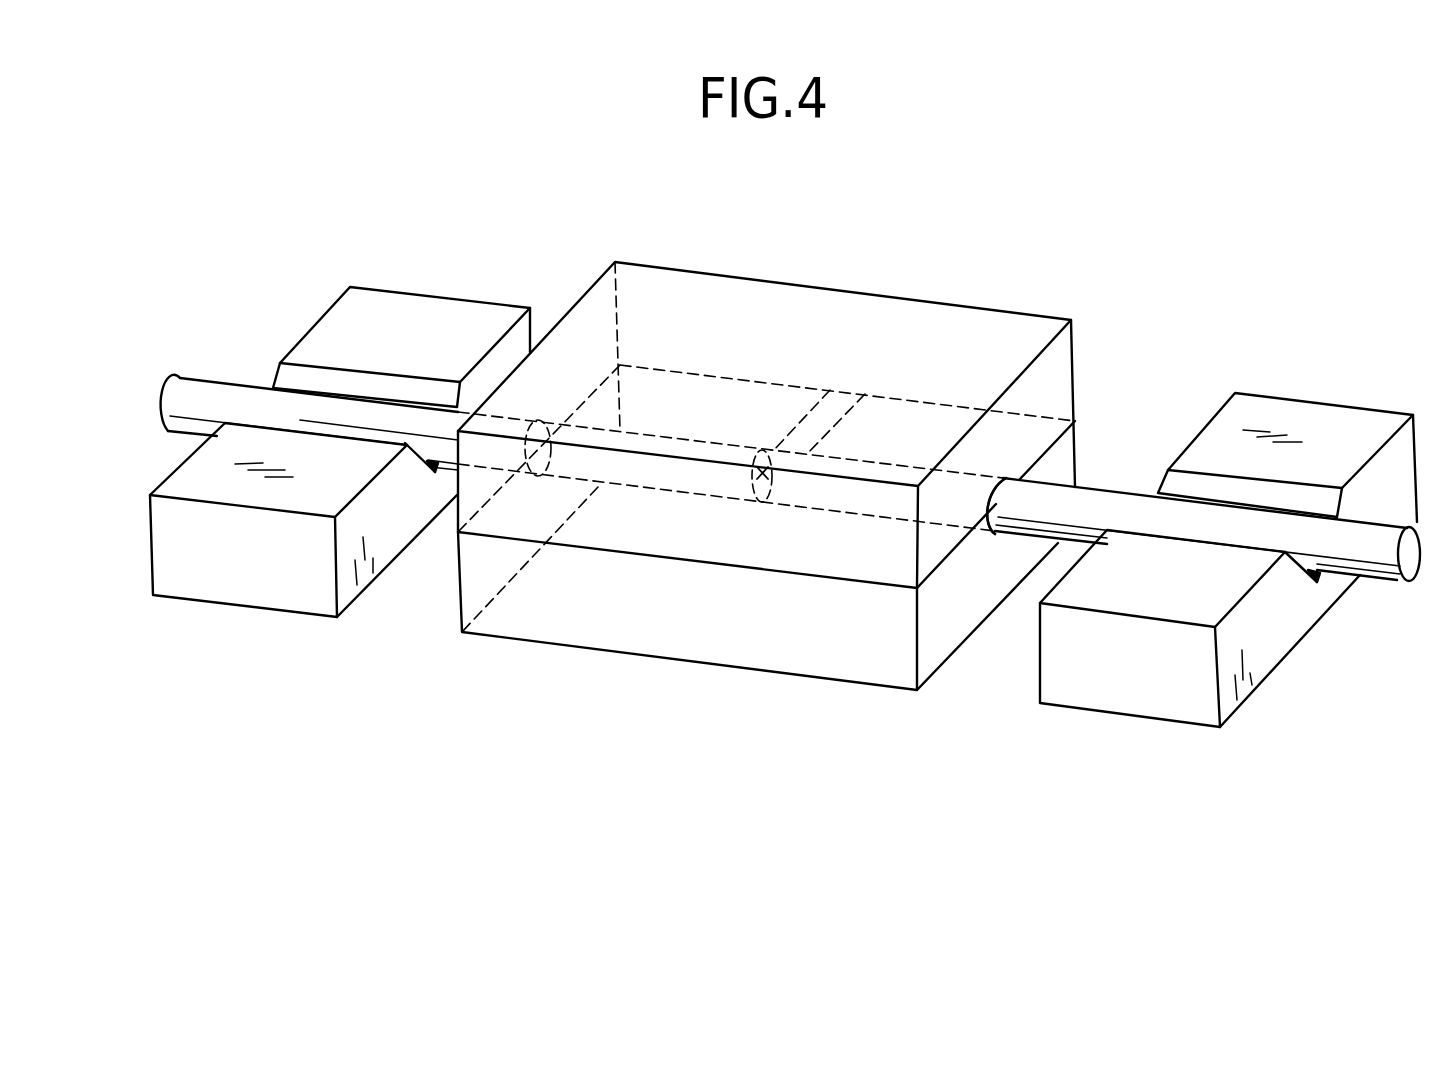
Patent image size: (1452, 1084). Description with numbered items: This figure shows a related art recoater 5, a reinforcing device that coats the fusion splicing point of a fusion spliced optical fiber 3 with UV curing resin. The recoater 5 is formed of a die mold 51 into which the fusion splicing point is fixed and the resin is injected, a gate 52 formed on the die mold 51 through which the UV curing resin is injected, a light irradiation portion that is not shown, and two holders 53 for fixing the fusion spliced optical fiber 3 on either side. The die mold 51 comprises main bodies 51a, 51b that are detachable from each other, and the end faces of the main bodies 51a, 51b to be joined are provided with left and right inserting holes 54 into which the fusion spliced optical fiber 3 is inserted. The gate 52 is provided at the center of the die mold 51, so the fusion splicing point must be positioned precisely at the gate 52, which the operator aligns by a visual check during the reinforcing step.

The fusion spliced optical fiber 3 is at (1095, 498).
The recoater 5 is at (982, 294).
The die mold 51 is at (1077, 338).
The main body 51a is at (1075, 382).
The main body 51b is at (875, 657).
The gate 52 is at (838, 403).
The holder 53 is at (426, 309).
The inserting hole 54 is at (1007, 477).